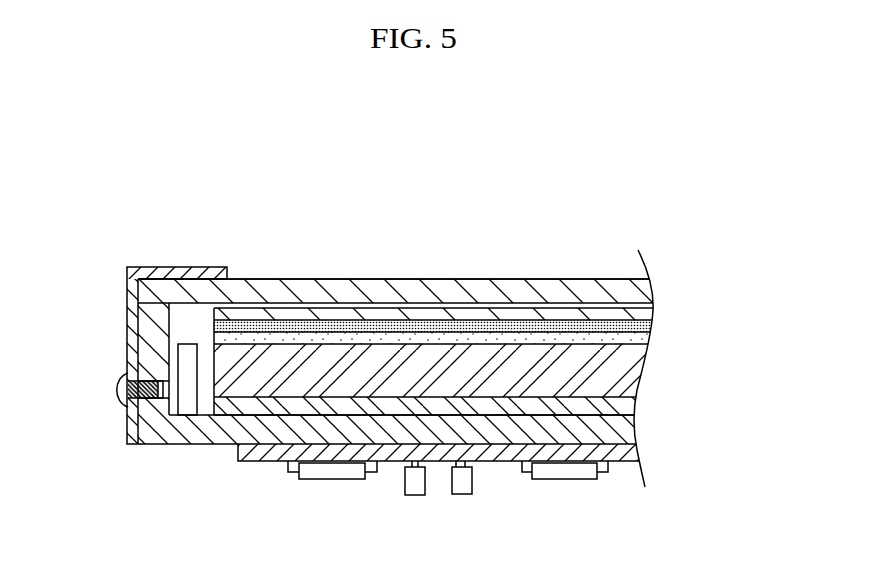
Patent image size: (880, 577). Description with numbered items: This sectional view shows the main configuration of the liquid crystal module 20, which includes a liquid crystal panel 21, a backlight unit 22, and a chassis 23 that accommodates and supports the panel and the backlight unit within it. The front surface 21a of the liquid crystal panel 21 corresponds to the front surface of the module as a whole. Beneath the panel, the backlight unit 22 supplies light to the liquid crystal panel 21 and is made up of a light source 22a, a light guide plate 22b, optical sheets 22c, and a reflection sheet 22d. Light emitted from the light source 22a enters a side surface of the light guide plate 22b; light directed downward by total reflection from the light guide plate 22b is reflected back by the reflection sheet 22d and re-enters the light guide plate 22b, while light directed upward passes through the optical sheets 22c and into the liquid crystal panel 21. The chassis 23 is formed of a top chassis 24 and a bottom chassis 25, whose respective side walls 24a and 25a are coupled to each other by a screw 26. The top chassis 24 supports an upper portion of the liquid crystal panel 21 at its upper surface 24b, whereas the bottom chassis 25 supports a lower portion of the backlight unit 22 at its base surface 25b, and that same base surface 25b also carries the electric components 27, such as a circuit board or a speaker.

The liquid crystal module 20 is at (297, 131).
The liquid crystal panel 21 is at (425, 295).
The front surface 21a is at (340, 278).
The backlight unit 22 is at (522, 362).
The light source 22a is at (191, 402).
The light guide plate 22b is at (655, 344).
The optical sheets 22c is at (655, 307).
The reflection sheet 22d is at (655, 398).
The chassis 23 is at (124, 238).
The top chassis 24 is at (128, 272).
The side wall 24a is at (134, 346).
The upper surface 24b is at (192, 272).
The bottom chassis 25 is at (219, 437).
The side wall 25a is at (150, 362).
The base surface 25b is at (338, 433).
The screw 26 is at (126, 397).
The electric components 27 is at (490, 454).